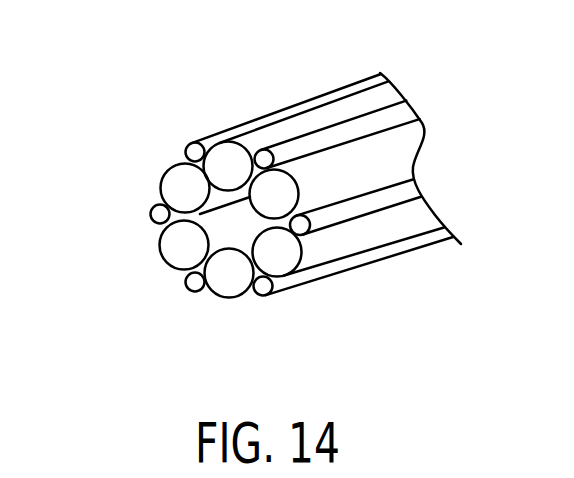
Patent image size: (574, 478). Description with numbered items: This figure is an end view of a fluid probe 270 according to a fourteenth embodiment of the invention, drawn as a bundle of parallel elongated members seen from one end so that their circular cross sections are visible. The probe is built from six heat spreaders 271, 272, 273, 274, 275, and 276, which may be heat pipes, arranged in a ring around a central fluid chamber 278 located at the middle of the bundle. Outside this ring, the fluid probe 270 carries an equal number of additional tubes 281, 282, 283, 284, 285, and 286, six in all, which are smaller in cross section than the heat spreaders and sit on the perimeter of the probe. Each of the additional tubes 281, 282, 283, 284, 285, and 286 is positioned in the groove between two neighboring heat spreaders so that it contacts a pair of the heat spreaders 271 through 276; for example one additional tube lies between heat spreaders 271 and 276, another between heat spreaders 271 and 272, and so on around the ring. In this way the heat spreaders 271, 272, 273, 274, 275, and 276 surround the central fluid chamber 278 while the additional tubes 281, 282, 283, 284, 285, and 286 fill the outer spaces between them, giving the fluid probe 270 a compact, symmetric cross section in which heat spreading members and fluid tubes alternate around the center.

The fluid probe 270 is at (95, 172).
The heat spreader 271 is at (251, 140).
The heat spreader 272 is at (373, 163).
The heat spreader 273 is at (347, 237).
The heat spreader 274 is at (229, 280).
The heat spreader 275 is at (190, 247).
The heat spreader 276 is at (187, 188).
The central fluid chamber 278 is at (230, 220).
The additional tube 281 is at (315, 142).
The additional tube 282 is at (390, 193).
The additional tube 283 is at (300, 282).
The additional tube 284 is at (196, 283).
The additional tube 285 is at (158, 214).
The additional tube 286 is at (196, 152).